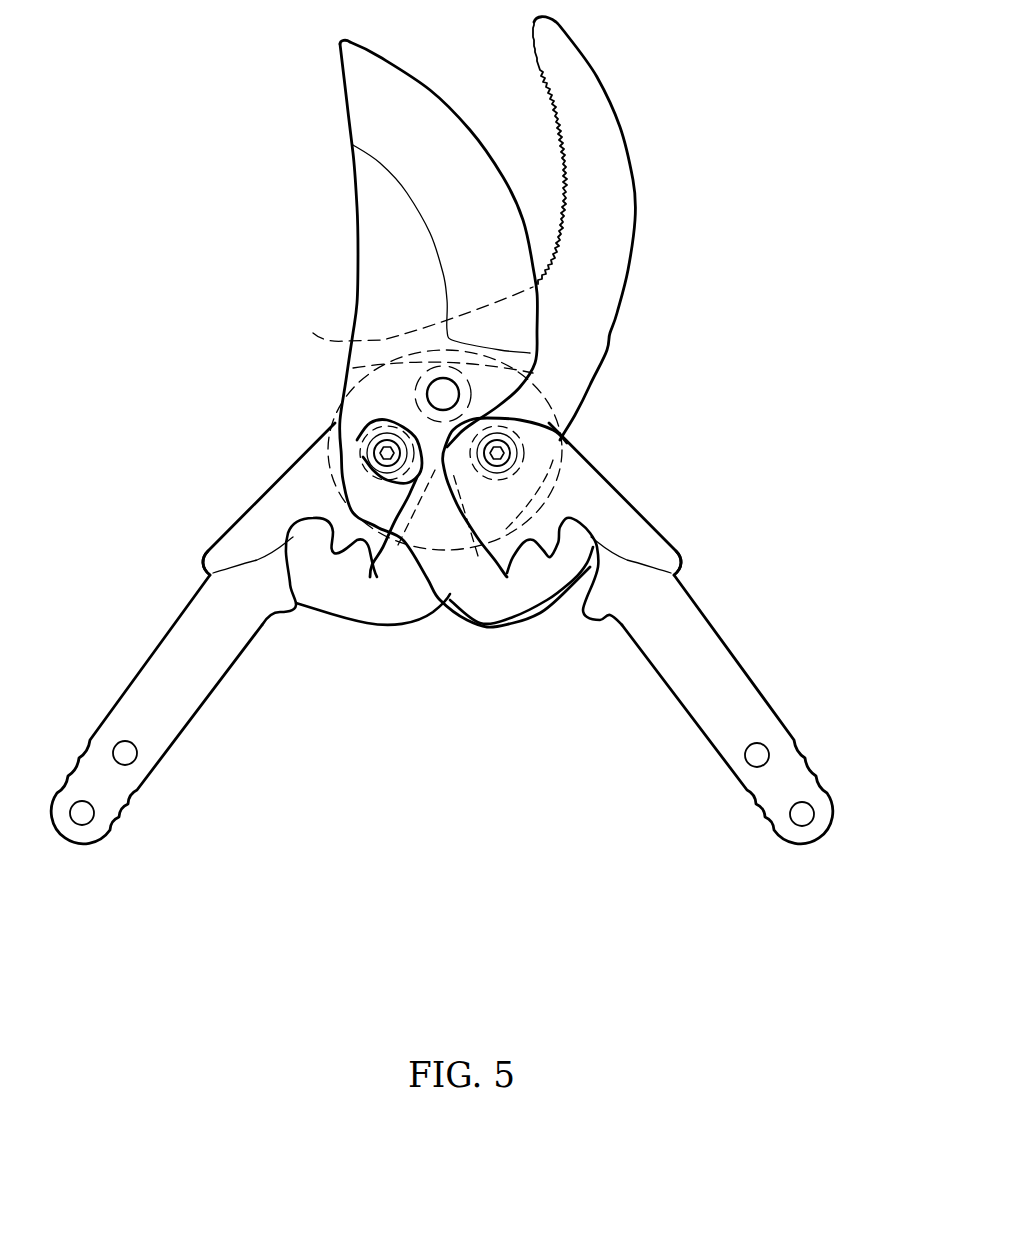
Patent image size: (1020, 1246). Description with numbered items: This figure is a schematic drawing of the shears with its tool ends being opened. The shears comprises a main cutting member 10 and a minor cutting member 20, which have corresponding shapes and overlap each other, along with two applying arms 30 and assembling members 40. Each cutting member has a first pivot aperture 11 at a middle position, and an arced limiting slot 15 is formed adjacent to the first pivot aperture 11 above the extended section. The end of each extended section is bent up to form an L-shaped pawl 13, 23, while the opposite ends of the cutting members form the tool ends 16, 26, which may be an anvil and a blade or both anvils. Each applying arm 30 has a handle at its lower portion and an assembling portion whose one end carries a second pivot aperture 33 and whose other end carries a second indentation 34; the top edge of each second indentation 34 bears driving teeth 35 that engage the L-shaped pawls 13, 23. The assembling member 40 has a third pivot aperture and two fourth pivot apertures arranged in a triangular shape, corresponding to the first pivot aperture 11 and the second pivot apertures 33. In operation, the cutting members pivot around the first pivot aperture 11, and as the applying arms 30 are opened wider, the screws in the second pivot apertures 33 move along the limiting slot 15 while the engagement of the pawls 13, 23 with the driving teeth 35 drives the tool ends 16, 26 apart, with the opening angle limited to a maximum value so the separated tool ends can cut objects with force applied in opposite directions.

The main cutting member 10 is at (350, 206).
The first pivot aperture 11 is at (467, 383).
The L-shaped pawl 13 is at (547, 577).
The arced limiting slot 15 is at (372, 432).
The tool end 16 is at (397, 122).
The minor cutting member 20 is at (641, 207).
The L-shaped pawl 23 is at (343, 587).
The tool end 26 is at (593, 120).
The applying arm 30 is at (132, 673).
The second pivot aperture 33 is at (362, 447).
The second indentation 34 is at (600, 543).
The driving teeth 35 is at (207, 570).
The assembling member 40 is at (313, 333).